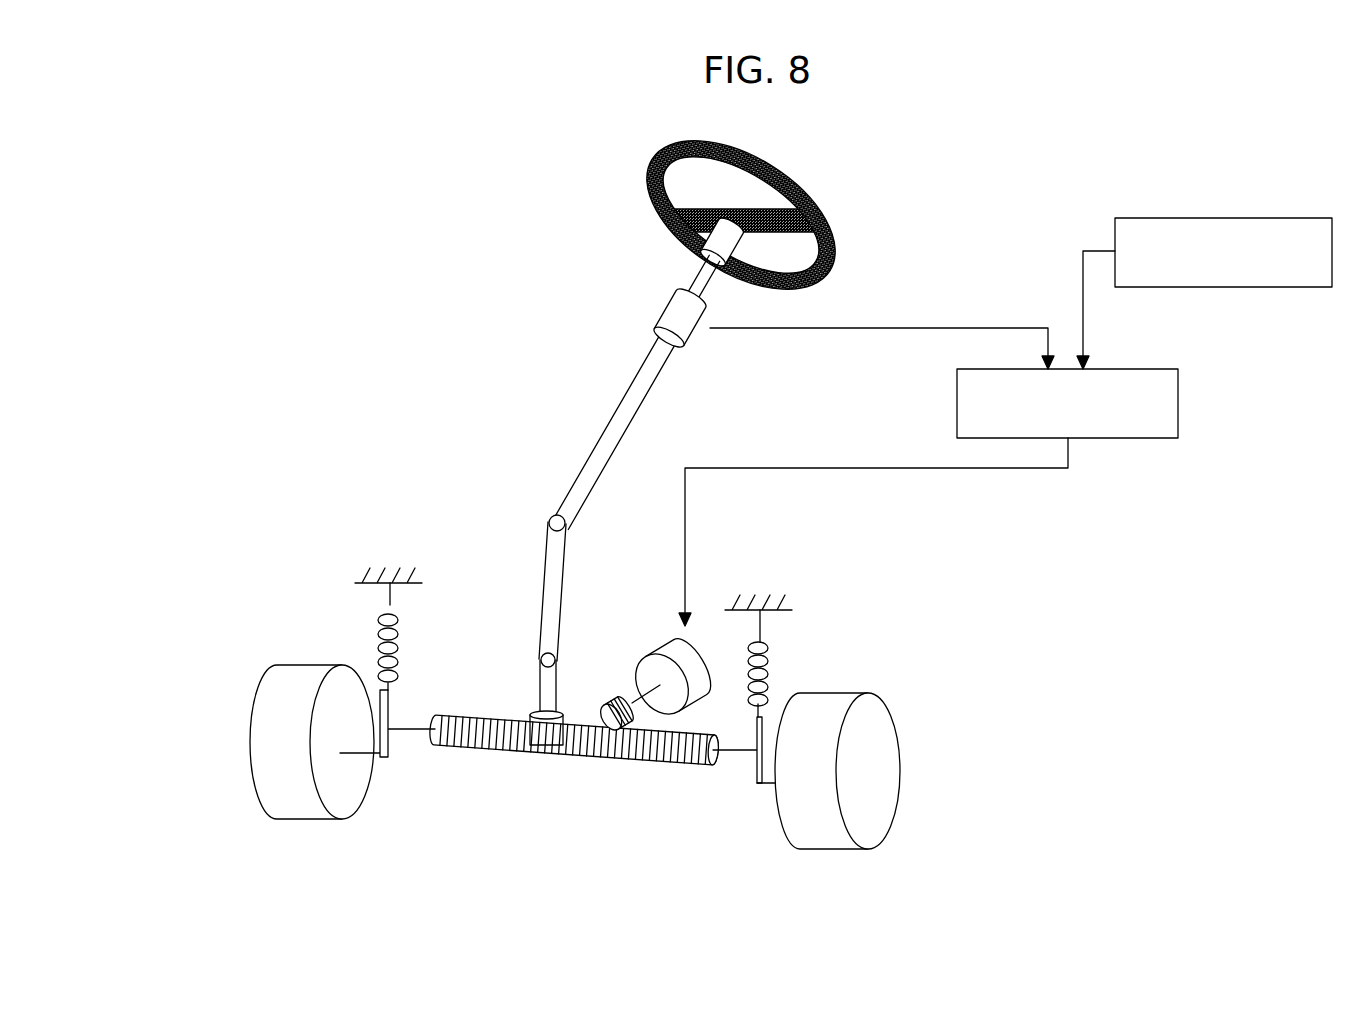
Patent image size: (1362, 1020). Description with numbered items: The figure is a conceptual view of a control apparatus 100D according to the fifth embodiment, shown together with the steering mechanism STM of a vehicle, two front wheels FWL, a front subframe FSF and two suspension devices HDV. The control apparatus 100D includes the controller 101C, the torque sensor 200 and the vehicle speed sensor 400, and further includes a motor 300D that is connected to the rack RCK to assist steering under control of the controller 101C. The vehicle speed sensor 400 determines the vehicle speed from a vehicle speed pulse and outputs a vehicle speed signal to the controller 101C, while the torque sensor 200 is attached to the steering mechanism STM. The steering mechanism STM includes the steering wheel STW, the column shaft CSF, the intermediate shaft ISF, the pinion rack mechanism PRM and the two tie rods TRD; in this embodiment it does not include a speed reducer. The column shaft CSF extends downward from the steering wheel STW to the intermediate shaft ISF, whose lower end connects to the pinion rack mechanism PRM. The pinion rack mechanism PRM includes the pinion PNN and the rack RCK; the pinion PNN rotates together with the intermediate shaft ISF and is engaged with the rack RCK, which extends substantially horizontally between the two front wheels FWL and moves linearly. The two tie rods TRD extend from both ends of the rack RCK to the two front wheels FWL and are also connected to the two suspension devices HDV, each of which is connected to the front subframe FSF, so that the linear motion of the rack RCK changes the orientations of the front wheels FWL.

The control apparatus 100D is at (1254, 126).
The steering mechanism STM is at (470, 368).
The steering wheel STW is at (787, 182).
The column shaft CSF is at (617, 382).
The torque sensor 200 is at (660, 305).
The intermediate shaft ISF is at (550, 592).
The pinion PNN is at (500, 753).
The rack RCK is at (570, 755).
The motor 300D is at (677, 648).
The pinion rack mechanism PRM is at (630, 765).
The tie rod TRD is at (377, 760).
The front wheel FWL is at (258, 732).
The suspension device HDV is at (375, 637).
The front subframe FSF is at (770, 612).
The controller 101C is at (1107, 369).
The vehicle speed sensor 400 is at (1242, 218).